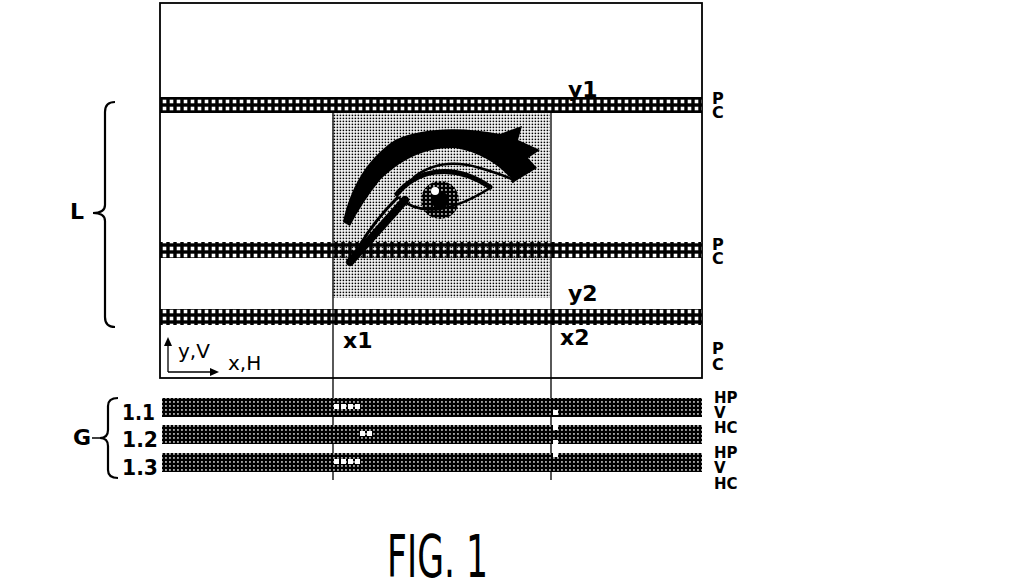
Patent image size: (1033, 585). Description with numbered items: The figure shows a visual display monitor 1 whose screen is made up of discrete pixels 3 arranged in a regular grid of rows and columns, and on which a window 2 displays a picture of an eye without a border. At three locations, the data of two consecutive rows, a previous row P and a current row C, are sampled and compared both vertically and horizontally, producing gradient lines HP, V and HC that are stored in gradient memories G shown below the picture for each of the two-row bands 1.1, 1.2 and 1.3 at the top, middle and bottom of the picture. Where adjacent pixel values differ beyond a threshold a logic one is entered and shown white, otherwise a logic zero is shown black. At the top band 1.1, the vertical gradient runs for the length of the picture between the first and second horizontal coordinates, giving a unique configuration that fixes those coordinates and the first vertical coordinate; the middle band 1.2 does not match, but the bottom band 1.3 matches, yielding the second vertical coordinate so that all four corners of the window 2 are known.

The visual display monitor 1 is at (150, 39).
The window 2 is at (322, 225).
The pixels 3 is at (244, 97).
The top band 1.1 is at (410, 109).
The middle band 1.2 is at (412, 251).
The bottom band 1.3 is at (412, 319).